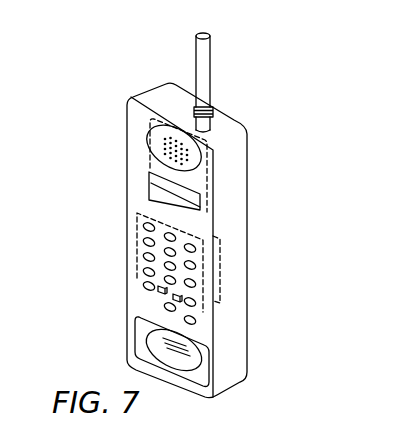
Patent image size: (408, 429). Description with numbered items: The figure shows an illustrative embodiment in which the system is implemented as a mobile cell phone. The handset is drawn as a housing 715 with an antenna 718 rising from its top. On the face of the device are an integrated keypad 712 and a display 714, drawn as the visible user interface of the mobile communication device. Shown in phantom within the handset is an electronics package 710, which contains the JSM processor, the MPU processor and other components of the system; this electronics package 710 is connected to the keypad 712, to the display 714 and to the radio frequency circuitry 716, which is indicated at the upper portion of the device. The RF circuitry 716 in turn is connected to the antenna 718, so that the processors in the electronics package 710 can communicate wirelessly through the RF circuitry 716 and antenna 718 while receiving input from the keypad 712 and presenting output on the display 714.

The electronics package 710 is at (217, 281).
The keypad 712 is at (147, 254).
The display 714 is at (147, 196).
The housing 715 is at (247, 333).
The radio frequency (RF) circuitry 716 is at (150, 163).
The antenna 718 is at (207, 70).